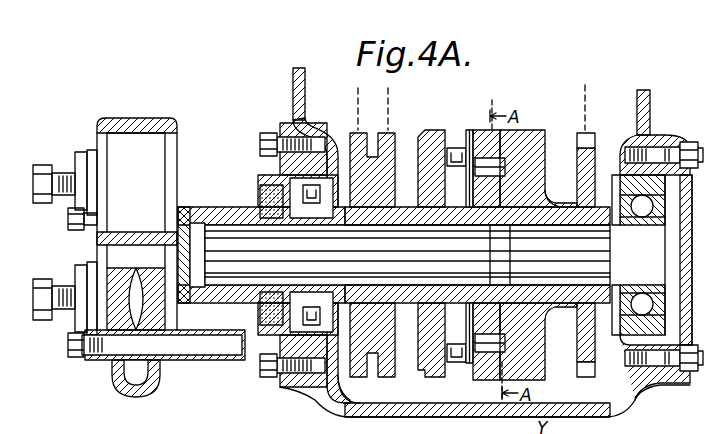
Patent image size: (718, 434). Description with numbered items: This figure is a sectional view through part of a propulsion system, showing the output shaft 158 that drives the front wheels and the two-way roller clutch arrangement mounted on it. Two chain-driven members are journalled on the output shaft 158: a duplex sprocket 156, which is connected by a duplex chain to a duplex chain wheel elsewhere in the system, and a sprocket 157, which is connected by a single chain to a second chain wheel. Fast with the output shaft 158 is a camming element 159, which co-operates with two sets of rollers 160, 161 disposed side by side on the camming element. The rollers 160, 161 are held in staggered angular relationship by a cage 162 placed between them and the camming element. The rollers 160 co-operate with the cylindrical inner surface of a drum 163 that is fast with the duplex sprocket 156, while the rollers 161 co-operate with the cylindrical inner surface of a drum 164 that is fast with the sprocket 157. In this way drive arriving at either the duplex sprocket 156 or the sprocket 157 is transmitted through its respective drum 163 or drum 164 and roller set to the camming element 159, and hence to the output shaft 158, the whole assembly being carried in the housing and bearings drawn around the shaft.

The duplex sprocket 156 is at (359, 370).
The sprocket 157 is at (596, 373).
The output shaft 158 is at (248, 224).
The camming element 159 is at (512, 197).
The rollers 160 is at (458, 158).
The rollers 161 is at (496, 160).
The cage 162 is at (490, 168).
The drum 163 is at (425, 372).
The drum 164 is at (528, 372).